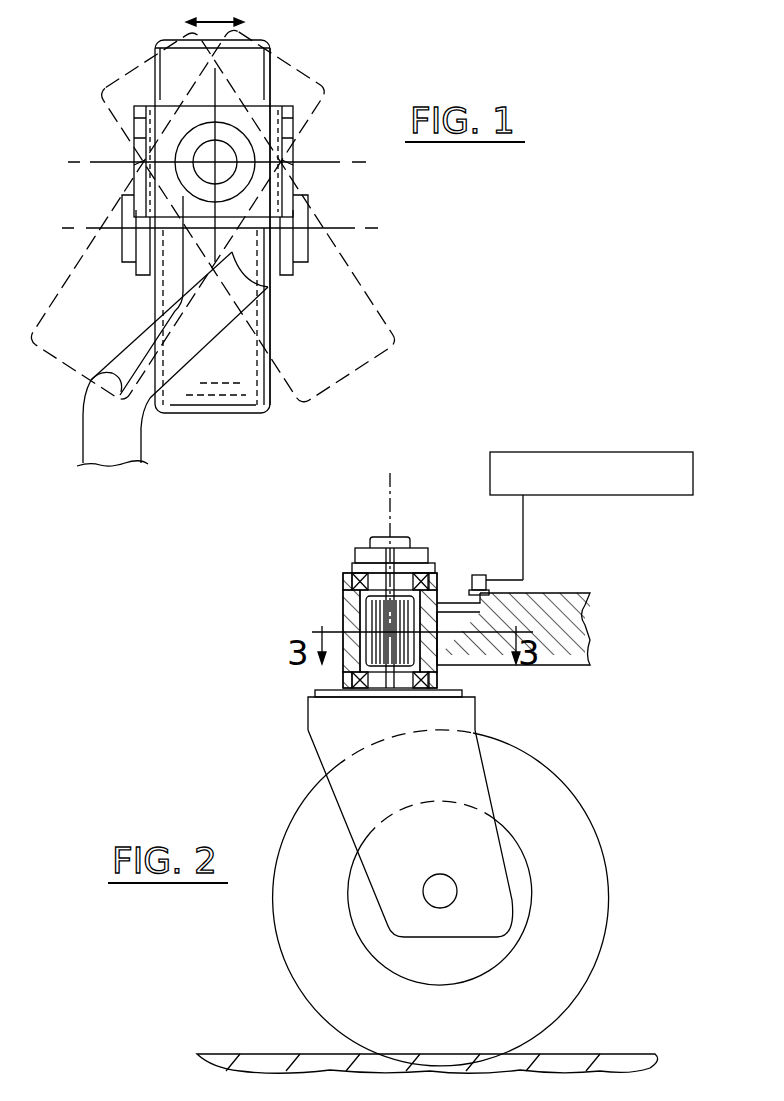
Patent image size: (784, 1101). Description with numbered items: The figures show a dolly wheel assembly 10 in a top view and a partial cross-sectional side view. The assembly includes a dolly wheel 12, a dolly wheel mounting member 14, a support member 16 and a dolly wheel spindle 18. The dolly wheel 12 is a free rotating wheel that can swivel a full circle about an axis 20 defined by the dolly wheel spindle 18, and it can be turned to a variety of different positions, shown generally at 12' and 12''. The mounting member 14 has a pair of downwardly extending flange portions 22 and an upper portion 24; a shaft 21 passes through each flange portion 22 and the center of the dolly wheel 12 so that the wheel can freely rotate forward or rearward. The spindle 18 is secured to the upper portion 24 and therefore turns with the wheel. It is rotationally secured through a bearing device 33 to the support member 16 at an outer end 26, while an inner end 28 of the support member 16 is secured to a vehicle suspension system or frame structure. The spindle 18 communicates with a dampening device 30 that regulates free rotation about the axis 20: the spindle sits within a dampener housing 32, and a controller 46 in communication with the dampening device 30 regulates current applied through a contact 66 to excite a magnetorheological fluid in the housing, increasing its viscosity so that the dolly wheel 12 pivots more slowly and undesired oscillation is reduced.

In FIG. 1, the dolly wheel assembly 10 is at (110, 133).
In FIG. 2, the dolly wheel assembly 10 is at (344, 486).
In FIG. 1, the dolly wheel 12 is at (241, 239).
In FIG. 2, the dolly wheel 12 is at (456, 899).
In FIG. 1, the dolly wheel in a turned position 12' is at (178, 214).
In FIG. 1, the dolly wheel in another turned position 12'' is at (280, 217).
In FIG. 1, the dolly wheel mounting member 14 is at (290, 120).
In FIG. 2, the dolly wheel mounting member 14 is at (320, 734).
In FIG. 1, the support member 16 is at (91, 380).
In FIG. 2, the support member 16 is at (570, 600).
In FIG. 1, the dolly wheel spindle 18 is at (228, 153).
In FIG. 2, the dolly wheel spindle 18 is at (396, 538).
In FIG. 2, the axis 20 is at (395, 490).
In FIG. 2, the shaft 21 is at (438, 893).
In FIG. 1, the flange portions 22 is at (150, 163).
In FIG. 2, the flange portions 22 is at (352, 797).
In FIG. 1, the upper portion 24 is at (263, 110).
In FIG. 2, the upper portion 24 is at (318, 690).
In FIG. 1, the outer end 26 is at (270, 289).
In FIG. 2, the outer end 26 is at (444, 658).
In FIG. 1, the inner end 28 is at (136, 453).
In FIG. 2, the inner end 28 is at (598, 632).
In FIG. 2, the dampening device 30 is at (326, 590).
In FIG. 2, the dampener housing 32 is at (343, 578).
In FIG. 2, the bearing device 33 is at (433, 573).
In FIG. 2, the controller 46 is at (572, 452).
In FIG. 2, the contact 66 is at (488, 578).